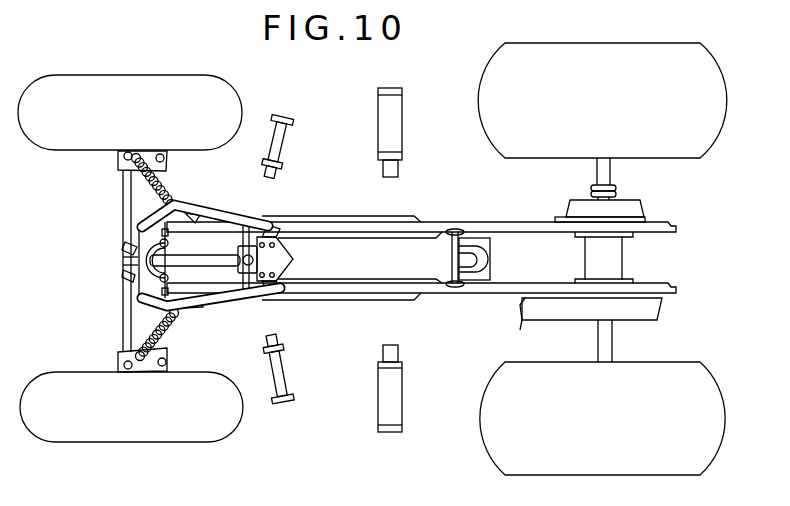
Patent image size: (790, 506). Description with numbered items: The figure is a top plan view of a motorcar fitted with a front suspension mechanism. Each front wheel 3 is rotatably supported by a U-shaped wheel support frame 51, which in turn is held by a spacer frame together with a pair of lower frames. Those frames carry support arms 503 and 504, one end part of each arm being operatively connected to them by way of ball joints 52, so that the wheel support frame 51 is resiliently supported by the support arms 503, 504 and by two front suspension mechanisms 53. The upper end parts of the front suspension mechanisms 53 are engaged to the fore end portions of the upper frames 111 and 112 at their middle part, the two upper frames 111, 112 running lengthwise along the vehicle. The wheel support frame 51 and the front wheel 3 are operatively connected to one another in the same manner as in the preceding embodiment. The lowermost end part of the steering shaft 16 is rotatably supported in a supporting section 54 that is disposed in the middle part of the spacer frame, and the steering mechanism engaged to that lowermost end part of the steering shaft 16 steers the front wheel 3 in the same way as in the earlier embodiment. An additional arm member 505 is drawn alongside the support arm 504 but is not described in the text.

The front wheel 3 is at (147, 427).
The steering shaft 16 is at (224, 256).
The wheel support frame 51 is at (118, 353).
The ball joint 52 is at (118, 272).
The front suspension mechanism 53 is at (147, 194).
The supporting section 54 is at (122, 260).
The upper frame 111 is at (468, 295).
The upper frame 112 is at (468, 222).
The support arm 503 is at (125, 306).
The support arm 504 is at (178, 322).
The lower wishbone arm 505 is at (233, 303).